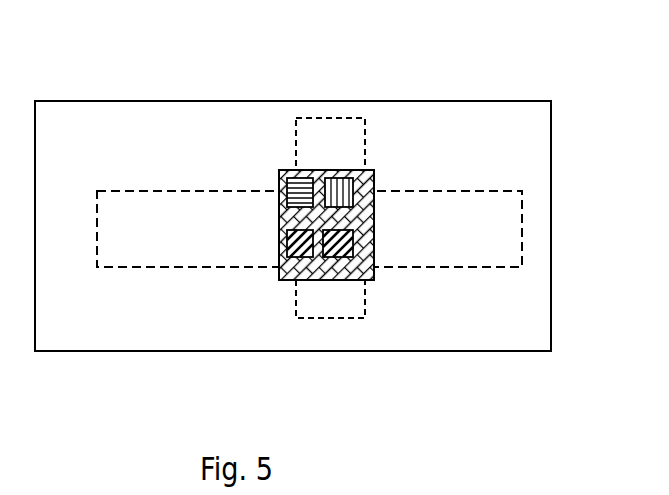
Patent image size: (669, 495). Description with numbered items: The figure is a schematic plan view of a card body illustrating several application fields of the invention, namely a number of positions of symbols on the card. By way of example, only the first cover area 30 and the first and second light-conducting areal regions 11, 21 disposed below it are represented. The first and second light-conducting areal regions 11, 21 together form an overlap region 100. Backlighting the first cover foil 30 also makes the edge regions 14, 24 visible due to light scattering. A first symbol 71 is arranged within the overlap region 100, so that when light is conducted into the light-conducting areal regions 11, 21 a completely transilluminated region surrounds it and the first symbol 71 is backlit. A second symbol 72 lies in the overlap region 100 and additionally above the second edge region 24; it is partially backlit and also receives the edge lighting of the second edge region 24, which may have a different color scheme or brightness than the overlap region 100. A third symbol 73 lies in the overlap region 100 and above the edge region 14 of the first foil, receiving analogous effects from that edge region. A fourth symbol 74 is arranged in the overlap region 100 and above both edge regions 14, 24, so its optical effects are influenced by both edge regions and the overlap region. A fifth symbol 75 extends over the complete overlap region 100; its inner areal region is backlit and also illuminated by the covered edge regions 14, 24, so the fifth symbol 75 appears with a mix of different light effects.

The first cover area 30 is at (457, 132).
The second edge region 24 is at (131, 188).
The second light-conducting areal region 21 is at (176, 252).
The first edge region 14 is at (343, 118).
The first light-conducting areal region 11 is at (322, 125).
The overlap region 100 is at (368, 235).
The fourth symbol 74 is at (286, 180).
The second symbol 72 is at (363, 169).
The fifth symbol 75 is at (375, 179).
The third symbol 73 is at (303, 258).
The first symbol 71 is at (345, 258).